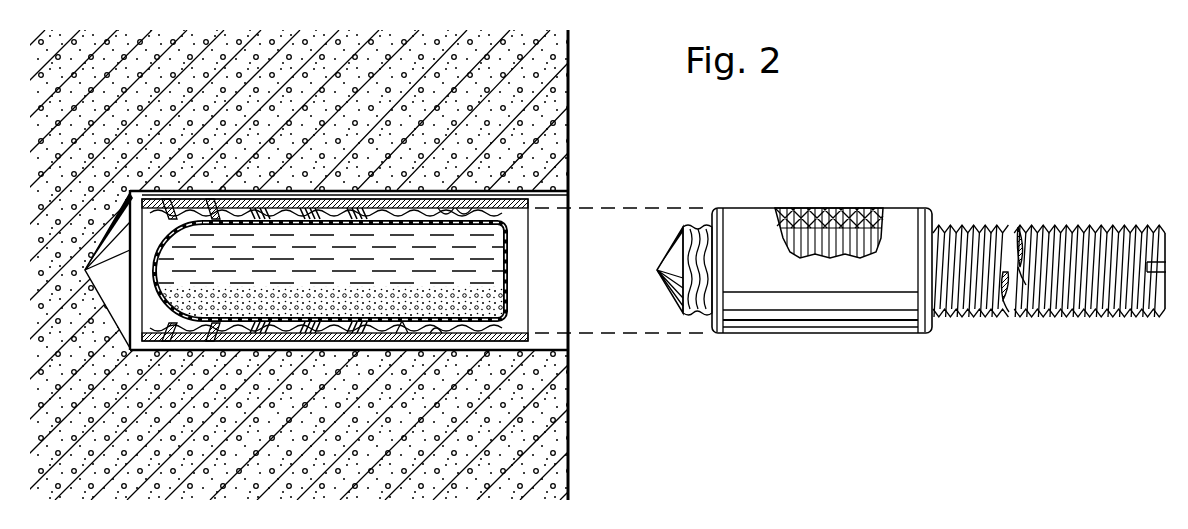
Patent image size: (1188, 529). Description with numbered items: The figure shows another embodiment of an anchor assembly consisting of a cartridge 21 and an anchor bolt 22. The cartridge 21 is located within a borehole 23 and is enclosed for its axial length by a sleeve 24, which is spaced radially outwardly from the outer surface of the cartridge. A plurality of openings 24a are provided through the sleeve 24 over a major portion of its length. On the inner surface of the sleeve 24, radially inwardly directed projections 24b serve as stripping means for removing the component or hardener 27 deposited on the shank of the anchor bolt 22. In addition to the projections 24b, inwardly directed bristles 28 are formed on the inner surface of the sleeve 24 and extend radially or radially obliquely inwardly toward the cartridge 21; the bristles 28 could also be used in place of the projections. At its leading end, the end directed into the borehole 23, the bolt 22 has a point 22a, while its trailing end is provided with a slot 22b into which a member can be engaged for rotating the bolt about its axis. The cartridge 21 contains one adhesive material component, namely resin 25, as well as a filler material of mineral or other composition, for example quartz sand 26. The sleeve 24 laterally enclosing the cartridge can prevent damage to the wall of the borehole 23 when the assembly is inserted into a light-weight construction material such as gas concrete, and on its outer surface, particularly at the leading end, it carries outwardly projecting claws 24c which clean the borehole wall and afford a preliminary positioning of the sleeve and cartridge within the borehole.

The cartridge 21 is at (160, 239).
The anchor bolt 22 is at (1045, 224).
The point 22a is at (657, 272).
The slot 22b is at (1153, 272).
The borehole 23 is at (553, 352).
The sleeve 24 is at (466, 345).
The openings 24a is at (273, 205).
The projections 24b is at (472, 205).
The claws 24c is at (163, 199).
The resin 25 is at (495, 251).
The quartz sand 26 is at (495, 297).
The hardener 27 is at (812, 208).
The bristles 28 is at (368, 338).